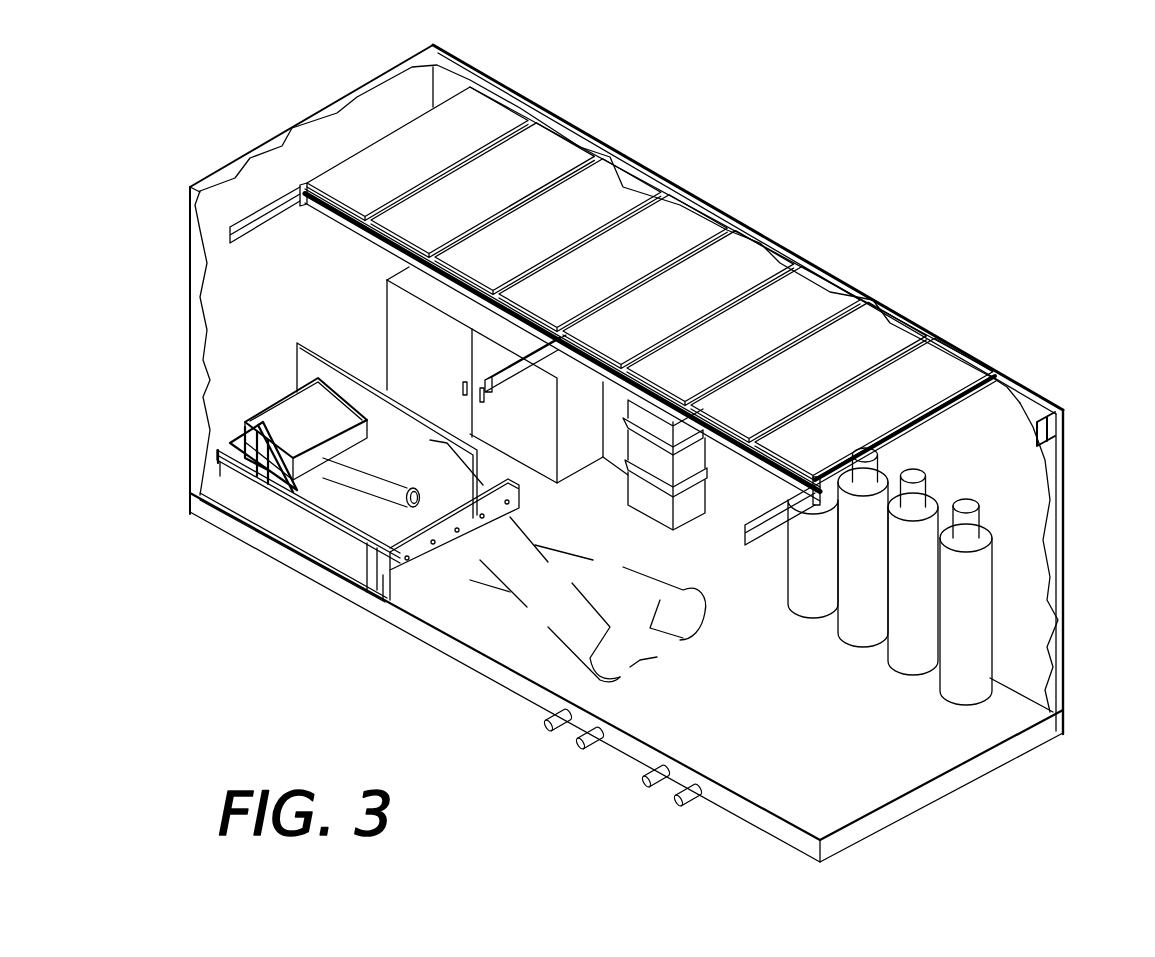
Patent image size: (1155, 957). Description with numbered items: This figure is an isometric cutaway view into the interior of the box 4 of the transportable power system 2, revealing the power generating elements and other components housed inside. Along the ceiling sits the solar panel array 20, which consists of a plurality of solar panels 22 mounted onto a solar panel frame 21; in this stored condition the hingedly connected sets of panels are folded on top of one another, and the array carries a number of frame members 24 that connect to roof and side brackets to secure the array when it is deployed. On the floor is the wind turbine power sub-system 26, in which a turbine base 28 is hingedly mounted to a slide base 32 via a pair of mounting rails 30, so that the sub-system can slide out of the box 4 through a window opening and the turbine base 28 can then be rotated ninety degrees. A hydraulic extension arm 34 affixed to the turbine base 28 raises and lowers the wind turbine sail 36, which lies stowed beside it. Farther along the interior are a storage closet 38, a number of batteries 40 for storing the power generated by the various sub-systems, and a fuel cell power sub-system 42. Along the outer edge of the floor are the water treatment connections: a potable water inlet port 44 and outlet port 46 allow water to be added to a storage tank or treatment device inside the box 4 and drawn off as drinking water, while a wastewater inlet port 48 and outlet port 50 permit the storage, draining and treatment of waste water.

The transportable power system 2 is at (1052, 208).
The box 4 is at (1048, 398).
The solar panel array 20 is at (711, 190).
The solar panel frame 21 is at (940, 437).
The solar panels 22 is at (871, 433).
The frame members 24 is at (247, 242).
The wind turbine power sub-system 26 is at (396, 657).
The turbine base 28 is at (283, 398).
The mounting rails 30 is at (236, 440).
The slide base 32 is at (318, 520).
The hydraulic extension arm 34 is at (395, 498).
The wind turbine sail 36 is at (673, 667).
The storage closet 38 is at (386, 327).
The batteries 40 is at (630, 487).
The fuel cell power sub-system 42 is at (825, 660).
The potable water inlet port 44 is at (545, 720).
The potable water outlet port 46 is at (577, 740).
The wastewater inlet port 48 is at (643, 778).
The wastewater outlet port 50 is at (675, 797).